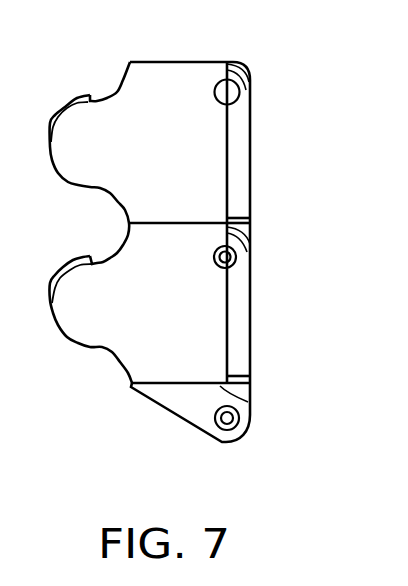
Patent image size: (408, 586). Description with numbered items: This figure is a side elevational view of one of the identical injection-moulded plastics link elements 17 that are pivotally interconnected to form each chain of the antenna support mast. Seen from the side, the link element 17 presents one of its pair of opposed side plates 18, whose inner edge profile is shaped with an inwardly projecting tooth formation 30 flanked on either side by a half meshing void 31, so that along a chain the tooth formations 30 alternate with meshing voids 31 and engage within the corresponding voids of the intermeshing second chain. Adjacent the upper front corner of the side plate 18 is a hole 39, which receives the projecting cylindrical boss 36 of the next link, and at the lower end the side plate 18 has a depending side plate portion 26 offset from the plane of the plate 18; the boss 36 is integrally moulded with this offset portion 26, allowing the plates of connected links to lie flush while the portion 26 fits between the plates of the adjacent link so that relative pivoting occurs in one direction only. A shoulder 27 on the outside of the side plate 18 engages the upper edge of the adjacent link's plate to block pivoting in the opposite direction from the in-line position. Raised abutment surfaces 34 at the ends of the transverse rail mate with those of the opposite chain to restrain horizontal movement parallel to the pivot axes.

The link element 17 is at (274, 144).
The side plate 18 is at (165, 152).
The side plate portion 26 is at (183, 401).
The shoulder 27 is at (248, 402).
The tooth formation 30 is at (88, 150).
The meshing void 31 is at (115, 93).
The raised abutment surface 34 is at (78, 96).
The cylindrical boss 36 is at (236, 253).
The hole 39 is at (229, 89).